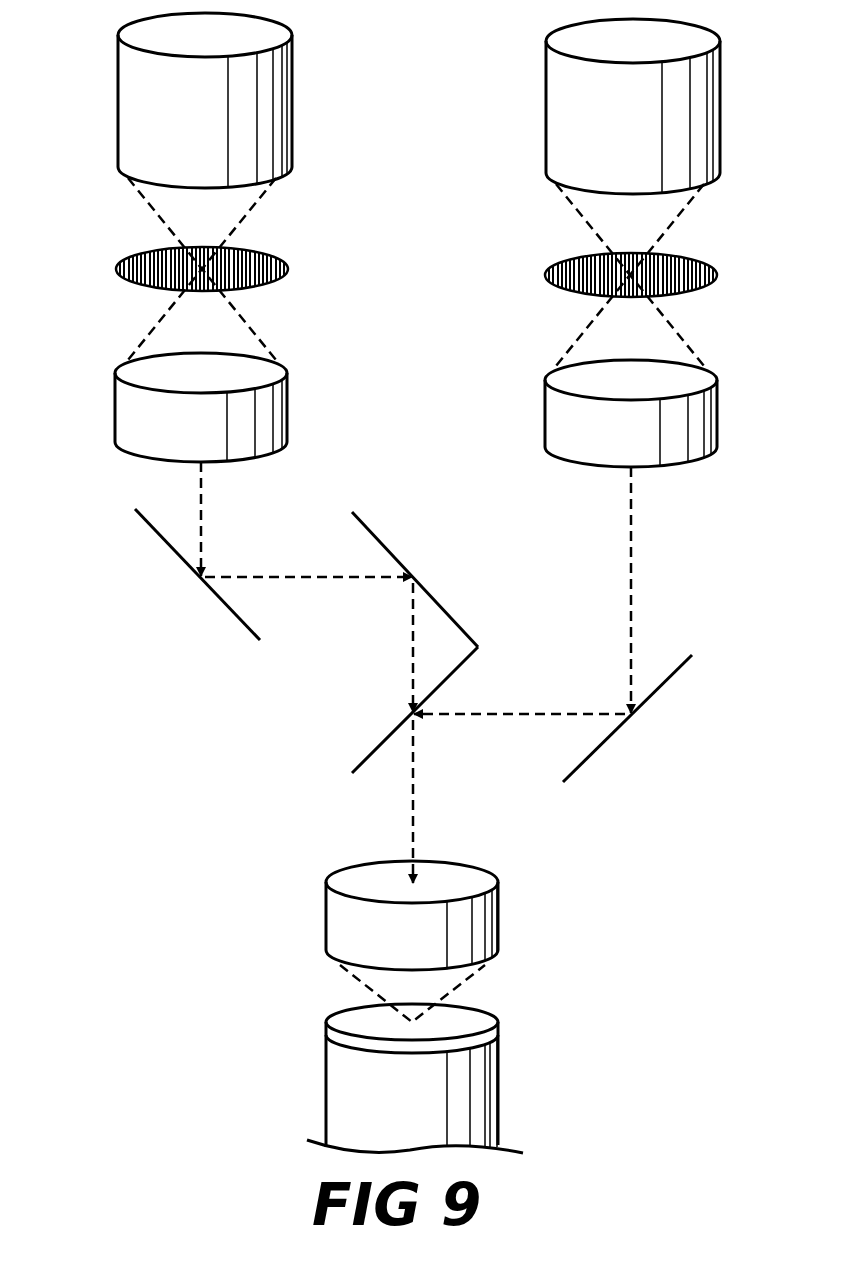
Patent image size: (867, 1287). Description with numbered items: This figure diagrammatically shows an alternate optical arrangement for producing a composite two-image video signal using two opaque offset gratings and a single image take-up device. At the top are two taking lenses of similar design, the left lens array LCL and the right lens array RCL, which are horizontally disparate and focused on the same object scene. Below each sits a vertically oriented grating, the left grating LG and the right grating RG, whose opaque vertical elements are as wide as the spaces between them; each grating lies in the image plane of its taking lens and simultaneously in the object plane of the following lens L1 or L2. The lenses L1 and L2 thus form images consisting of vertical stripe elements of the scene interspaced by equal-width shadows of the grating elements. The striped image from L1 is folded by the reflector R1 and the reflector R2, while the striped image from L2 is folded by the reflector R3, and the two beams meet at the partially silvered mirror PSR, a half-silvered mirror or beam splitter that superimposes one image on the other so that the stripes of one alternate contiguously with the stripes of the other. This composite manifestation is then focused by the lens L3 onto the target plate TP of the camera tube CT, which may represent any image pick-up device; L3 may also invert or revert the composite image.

The left lens array LCL is at (128, 97).
The left grating LG is at (116, 268).
The lens L1 is at (128, 403).
The right lens array RCL is at (710, 101).
The right grating RG is at (718, 275).
The lens L2 is at (705, 420).
The reflector R1 is at (208, 593).
The reflector R2 is at (413, 566).
The partially silvered mirror PSR is at (362, 754).
The reflector R3 is at (618, 737).
The lens L3 is at (338, 918).
The target plate TP is at (500, 1027).
The camera tube CT is at (342, 1103).